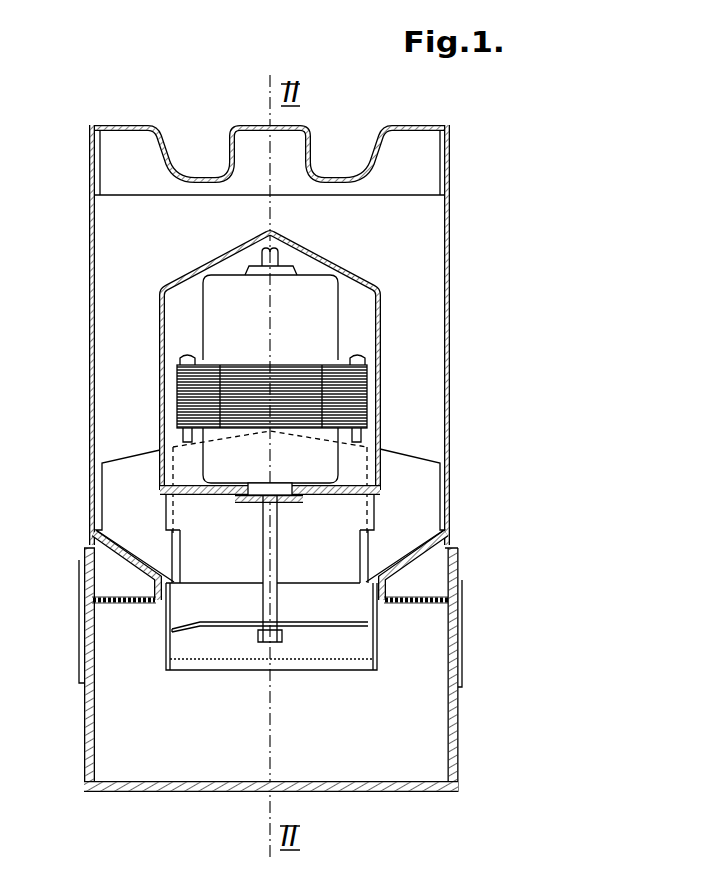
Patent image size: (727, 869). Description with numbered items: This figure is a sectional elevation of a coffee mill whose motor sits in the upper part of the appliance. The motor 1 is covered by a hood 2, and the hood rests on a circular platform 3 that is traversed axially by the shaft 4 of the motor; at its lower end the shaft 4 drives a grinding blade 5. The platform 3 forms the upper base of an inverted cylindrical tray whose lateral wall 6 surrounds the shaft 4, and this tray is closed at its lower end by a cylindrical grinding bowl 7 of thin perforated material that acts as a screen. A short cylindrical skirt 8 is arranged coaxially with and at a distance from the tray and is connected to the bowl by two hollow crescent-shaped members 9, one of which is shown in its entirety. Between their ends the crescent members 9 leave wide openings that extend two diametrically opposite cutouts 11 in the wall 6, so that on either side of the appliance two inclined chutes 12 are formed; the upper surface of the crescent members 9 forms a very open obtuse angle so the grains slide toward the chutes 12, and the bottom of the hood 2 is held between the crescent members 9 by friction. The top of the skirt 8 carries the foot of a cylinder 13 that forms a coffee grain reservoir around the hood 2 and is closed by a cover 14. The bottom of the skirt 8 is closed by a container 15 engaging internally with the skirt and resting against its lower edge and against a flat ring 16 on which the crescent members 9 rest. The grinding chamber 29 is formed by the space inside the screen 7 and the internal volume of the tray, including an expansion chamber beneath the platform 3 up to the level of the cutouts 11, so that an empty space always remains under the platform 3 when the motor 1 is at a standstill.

The motor 1 is at (313, 285).
The hood 2 is at (188, 283).
The circular platform 3 is at (366, 530).
The shaft 4 is at (278, 552).
The grinding blade 5 is at (335, 628).
The lateral wall 6 is at (385, 494).
The cylindrical grinding bowl 7 is at (165, 645).
The cylindrical skirt 8 is at (461, 652).
The crescent-shaped members 9 is at (127, 470).
The cutouts 11 is at (175, 545).
The inclined chutes 12 is at (128, 550).
The cylinder 13 is at (92, 325).
The cover 14 is at (257, 126).
The container 15 is at (222, 790).
The flat ring 16 is at (120, 604).
The grinding chamber 29 is at (318, 571).